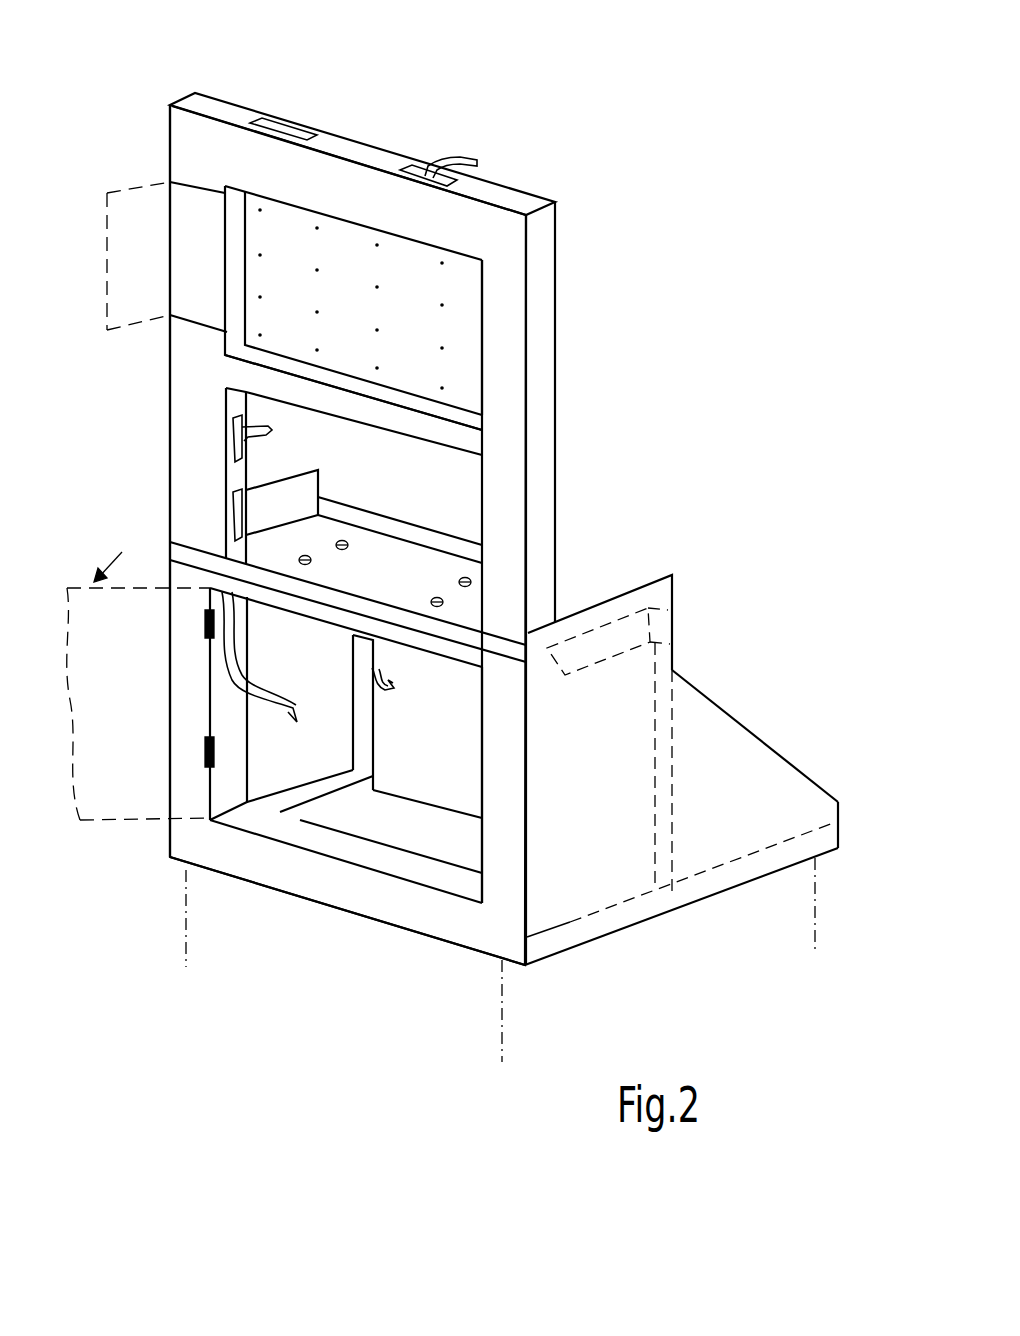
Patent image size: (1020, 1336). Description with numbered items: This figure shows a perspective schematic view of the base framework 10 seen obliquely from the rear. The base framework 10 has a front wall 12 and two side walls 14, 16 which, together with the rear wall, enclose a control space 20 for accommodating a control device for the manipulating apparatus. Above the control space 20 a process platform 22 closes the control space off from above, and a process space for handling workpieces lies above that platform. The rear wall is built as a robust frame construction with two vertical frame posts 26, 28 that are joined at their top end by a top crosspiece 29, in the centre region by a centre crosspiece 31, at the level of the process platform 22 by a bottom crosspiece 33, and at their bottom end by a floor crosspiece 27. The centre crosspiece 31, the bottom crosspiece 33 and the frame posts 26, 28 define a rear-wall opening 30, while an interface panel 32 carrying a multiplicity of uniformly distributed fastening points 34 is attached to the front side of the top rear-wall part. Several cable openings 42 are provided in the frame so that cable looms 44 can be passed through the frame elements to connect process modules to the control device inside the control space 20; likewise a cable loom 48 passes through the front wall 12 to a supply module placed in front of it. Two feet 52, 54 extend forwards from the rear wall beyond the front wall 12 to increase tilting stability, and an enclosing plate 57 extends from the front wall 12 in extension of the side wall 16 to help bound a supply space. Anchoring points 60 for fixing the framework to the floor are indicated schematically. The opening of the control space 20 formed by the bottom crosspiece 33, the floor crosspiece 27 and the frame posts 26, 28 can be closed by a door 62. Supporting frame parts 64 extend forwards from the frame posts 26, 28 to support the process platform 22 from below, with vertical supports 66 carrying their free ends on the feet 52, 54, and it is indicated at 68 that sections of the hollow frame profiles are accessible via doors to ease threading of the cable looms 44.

The base framework 10 is at (672, 240).
The front wall 12 is at (455, 737).
The side wall 14 is at (268, 705).
The side wall 16 is at (567, 922).
The control space 20 is at (424, 761).
The process platform 22 is at (412, 568).
The frame post 26 is at (190, 523).
The floor crosspiece 27 is at (430, 908).
The frame post 28 is at (540, 370).
The top crosspiece 29 is at (375, 197).
The rear-wall opening 30 is at (429, 496).
The centre crosspiece 31 is at (270, 387).
The interface panel 32 is at (343, 250).
The bottom crosspiece 33 is at (455, 655).
The fastening points 34 is at (445, 265).
The cable openings 42 is at (280, 115).
The cable looms 44 is at (463, 157).
The cable loom 48 is at (398, 678).
The foot 52 is at (330, 800).
The foot 54 is at (840, 850).
The enclosing plate 57 is at (733, 773).
The anchoring points 60 is at (185, 938).
The door 62 is at (95, 830).
The supporting frame part 64 is at (680, 615).
The vertical support 66 is at (675, 733).
The access door 68 is at (128, 182).